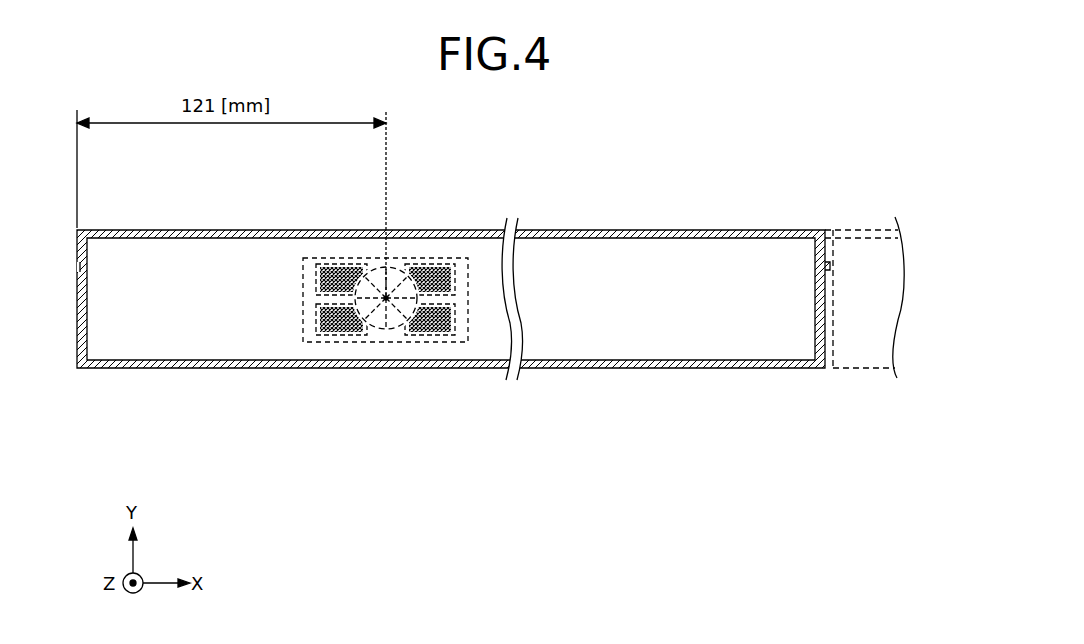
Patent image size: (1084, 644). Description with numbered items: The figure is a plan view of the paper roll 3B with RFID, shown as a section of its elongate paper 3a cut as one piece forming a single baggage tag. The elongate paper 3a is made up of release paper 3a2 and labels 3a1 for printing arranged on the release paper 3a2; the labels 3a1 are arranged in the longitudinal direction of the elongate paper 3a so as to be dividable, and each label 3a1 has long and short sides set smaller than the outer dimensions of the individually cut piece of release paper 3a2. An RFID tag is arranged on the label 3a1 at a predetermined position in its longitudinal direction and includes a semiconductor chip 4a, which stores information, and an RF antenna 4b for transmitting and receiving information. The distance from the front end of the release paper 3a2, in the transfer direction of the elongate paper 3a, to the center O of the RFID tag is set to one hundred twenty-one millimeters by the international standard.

The paper roll with RFID 3B is at (690, 375).
The elongate paper 3a is at (278, 176).
The label 3a1 is at (250, 248).
The release paper 3a2 is at (200, 230).
The semiconductor chip 4a is at (368, 338).
The RF antenna 4b is at (332, 338).
The center of the RFID tag O is at (386, 298).